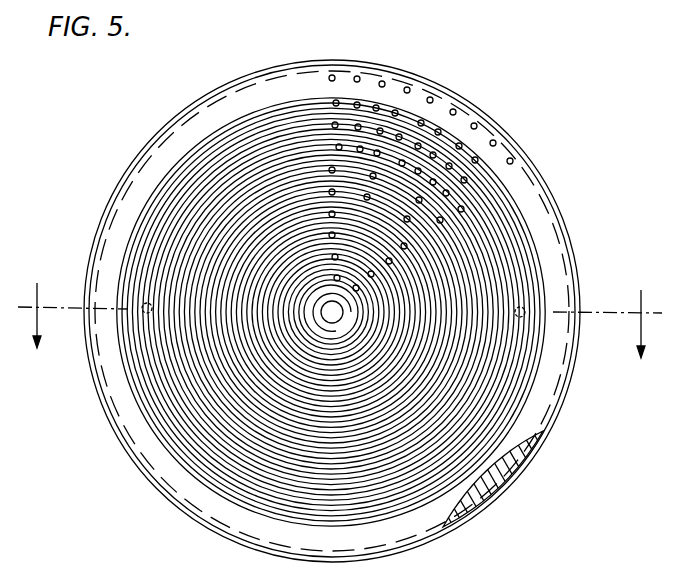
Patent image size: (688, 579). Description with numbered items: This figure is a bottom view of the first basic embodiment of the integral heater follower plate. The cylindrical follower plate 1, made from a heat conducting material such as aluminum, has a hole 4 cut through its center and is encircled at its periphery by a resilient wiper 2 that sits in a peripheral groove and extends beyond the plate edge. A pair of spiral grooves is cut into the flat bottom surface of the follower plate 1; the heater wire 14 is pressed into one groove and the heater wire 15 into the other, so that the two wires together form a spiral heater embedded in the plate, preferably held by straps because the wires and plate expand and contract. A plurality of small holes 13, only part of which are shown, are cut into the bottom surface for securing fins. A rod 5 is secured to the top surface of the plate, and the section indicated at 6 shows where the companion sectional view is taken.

The follower plate 1 is at (513, 122).
The wiper 2 is at (541, 449).
The hole 4 is at (337, 320).
The rod 5 is at (516, 302).
The section line / locating hole 6 is at (144, 303).
The small holes 13 is at (340, 145).
The heater wire 14 is at (140, 198).
The heater wire 15 is at (150, 385).